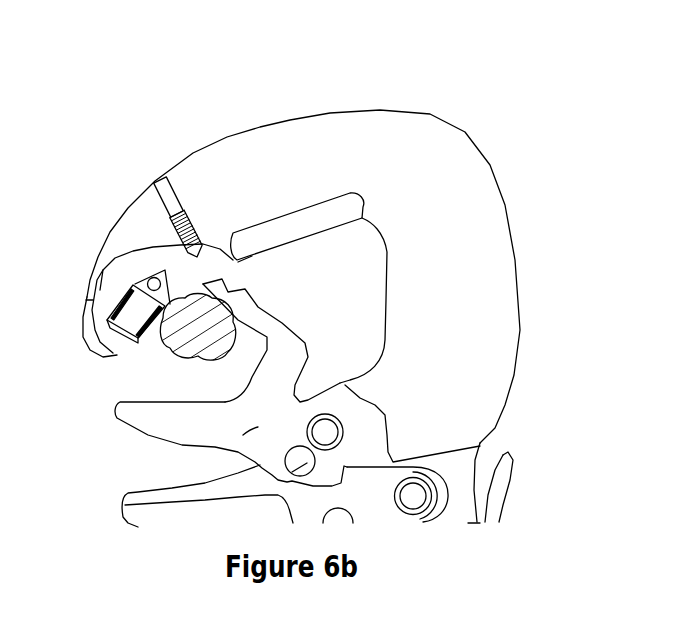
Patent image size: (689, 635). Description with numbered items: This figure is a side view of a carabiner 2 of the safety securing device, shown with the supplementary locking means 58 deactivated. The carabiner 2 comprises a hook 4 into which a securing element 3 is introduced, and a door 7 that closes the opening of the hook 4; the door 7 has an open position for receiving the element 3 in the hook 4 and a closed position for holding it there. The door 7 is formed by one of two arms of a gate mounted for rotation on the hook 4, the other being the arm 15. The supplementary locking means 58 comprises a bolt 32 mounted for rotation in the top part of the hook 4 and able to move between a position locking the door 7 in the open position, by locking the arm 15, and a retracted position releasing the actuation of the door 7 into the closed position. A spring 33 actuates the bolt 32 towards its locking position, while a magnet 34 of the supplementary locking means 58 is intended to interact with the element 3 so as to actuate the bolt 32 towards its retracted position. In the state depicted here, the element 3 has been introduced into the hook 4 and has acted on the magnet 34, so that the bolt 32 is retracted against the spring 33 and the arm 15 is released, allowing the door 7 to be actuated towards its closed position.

The carabiner 2 is at (365, 80).
The hook 4 is at (385, 144).
The bolt 32 is at (221, 258).
The supplementary locking means 58 is at (179, 256).
The spring 33 is at (200, 219).
The securing element 3 is at (192, 318).
The magnet 34 is at (131, 303).
The arm 15 is at (258, 307).
The door 7 is at (166, 426).